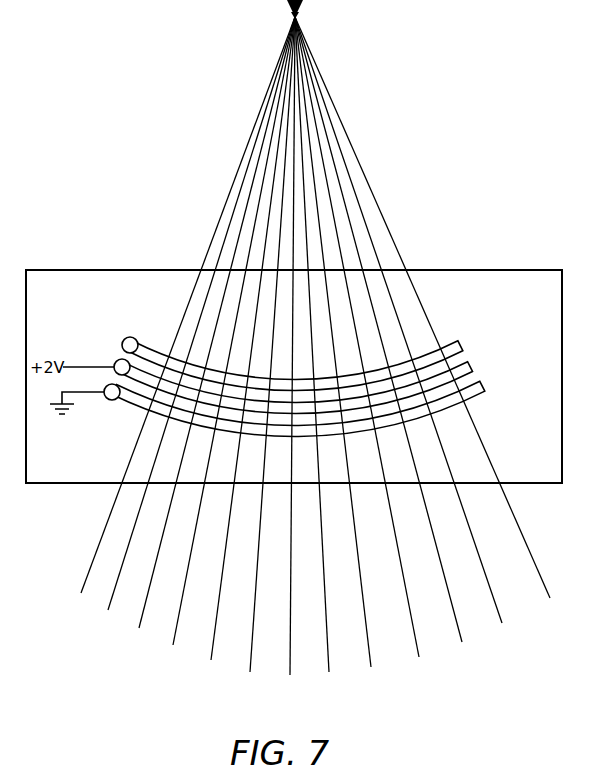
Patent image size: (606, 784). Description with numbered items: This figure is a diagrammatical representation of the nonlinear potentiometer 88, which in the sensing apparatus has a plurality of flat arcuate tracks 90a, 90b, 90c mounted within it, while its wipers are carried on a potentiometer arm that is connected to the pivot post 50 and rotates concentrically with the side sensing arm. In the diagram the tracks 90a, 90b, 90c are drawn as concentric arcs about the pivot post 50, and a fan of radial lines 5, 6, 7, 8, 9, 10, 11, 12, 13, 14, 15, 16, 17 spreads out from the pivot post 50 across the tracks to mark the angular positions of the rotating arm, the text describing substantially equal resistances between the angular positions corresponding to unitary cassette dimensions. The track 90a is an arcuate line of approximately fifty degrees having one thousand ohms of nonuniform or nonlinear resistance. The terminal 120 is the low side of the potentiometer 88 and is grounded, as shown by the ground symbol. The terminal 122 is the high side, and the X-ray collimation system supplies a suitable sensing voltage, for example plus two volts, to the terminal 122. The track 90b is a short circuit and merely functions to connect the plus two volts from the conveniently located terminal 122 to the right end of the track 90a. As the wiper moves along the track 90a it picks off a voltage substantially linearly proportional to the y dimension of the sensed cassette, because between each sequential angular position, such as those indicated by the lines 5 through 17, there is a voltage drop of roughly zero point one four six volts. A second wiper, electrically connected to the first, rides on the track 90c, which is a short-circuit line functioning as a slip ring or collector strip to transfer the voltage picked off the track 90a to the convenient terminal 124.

The electron beam path 5 is at (183, 317).
The electron beam path 6 is at (197, 324).
The electron beam path 7 is at (212, 334).
The electron beam path 8 is at (230, 343).
The electron beam path 9 is at (250, 351).
The electron beam path 10 is at (268, 357).
The electron beam path 11 is at (293, 358).
The electron beam path 12 is at (318, 357).
The electron beam path 13 is at (337, 354).
The electron beam path 14 is at (363, 349).
The electron beam path 15 is at (383, 343).
The electron beam path 16 is at (405, 334).
The electron beam path 17 is at (430, 321).
The pivot post 50 is at (298, 20).
The potentiometer 88 is at (480, 264).
The track 90a is at (486, 396).
The track 90b is at (470, 362).
The track 90c is at (461, 338).
The terminal 120 is at (107, 399).
The terminal 122 is at (116, 362).
The terminal 124 is at (124, 339).